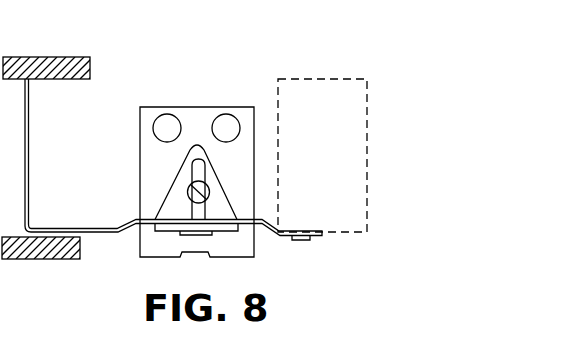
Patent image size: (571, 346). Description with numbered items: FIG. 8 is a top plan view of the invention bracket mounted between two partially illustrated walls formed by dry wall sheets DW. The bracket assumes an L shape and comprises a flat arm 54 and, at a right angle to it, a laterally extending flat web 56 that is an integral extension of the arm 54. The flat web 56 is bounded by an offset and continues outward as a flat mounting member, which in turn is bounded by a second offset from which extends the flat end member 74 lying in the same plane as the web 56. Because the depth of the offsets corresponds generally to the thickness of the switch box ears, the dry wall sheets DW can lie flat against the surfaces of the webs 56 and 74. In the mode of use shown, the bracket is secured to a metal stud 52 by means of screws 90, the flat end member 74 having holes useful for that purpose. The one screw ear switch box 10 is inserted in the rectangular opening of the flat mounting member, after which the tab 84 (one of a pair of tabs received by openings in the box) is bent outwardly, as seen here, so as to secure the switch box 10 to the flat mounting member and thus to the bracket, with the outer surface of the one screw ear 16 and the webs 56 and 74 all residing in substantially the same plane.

The one screw ear switch box 10 is at (208, 97).
The one screw ear 16 is at (219, 208).
The metal stud 52 is at (340, 232).
The flat arm 54 is at (29, 145).
The flat web 56 is at (53, 228).
The flat end member 74 is at (6, 105).
The tab 84 is at (193, 232).
The screws 90 is at (300, 238).
The dry wall sheets DW is at (55, 57).